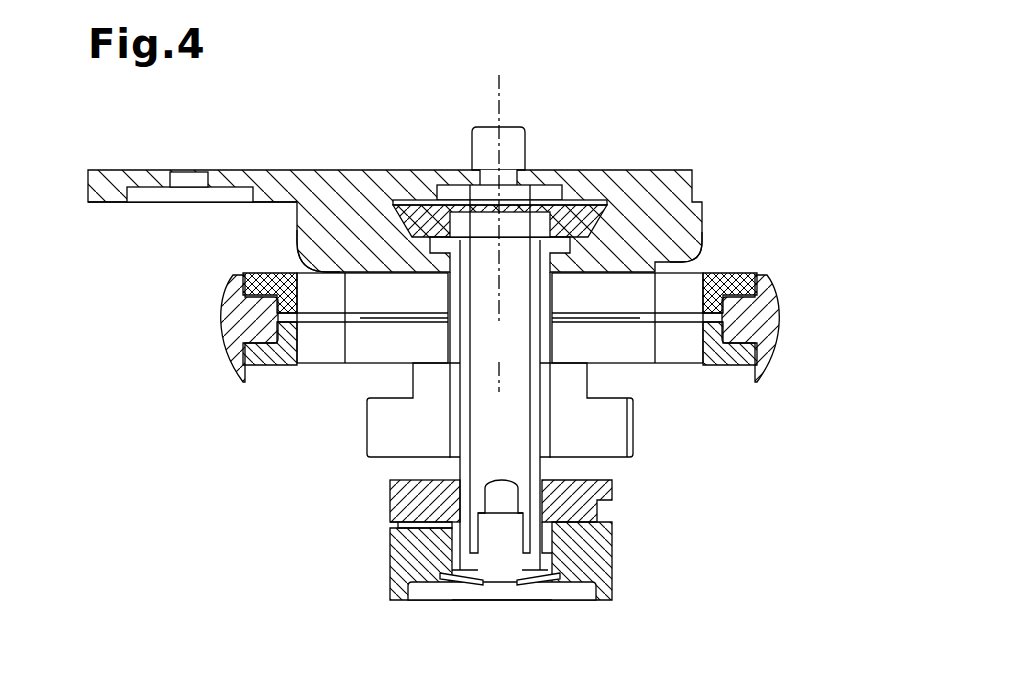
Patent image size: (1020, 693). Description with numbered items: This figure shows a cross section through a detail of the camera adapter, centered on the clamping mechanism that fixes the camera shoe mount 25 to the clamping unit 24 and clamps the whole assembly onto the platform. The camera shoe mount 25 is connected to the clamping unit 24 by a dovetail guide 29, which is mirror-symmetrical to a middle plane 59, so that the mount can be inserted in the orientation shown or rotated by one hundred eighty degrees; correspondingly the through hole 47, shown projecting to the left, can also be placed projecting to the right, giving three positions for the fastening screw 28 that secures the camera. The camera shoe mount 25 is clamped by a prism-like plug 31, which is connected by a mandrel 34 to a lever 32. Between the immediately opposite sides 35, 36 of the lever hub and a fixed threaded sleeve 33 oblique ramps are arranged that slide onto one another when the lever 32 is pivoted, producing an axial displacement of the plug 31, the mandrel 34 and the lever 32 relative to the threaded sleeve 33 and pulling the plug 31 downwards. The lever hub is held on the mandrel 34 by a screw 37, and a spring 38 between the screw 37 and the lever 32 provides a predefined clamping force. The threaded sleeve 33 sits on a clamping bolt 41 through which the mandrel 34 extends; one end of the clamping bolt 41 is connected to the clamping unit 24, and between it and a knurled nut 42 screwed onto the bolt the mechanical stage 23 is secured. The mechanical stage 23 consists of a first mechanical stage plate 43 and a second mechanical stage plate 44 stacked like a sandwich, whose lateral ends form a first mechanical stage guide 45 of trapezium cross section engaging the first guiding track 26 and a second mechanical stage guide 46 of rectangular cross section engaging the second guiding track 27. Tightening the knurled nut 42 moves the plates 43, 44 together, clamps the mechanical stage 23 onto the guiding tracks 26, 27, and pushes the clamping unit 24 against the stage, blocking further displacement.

The mechanical stage 23 is at (222, 364).
The clamping unit 24 is at (283, 240).
The camera shoe mount 25 is at (78, 205).
The first guiding track 26 is at (748, 315).
The second guiding track 27 is at (255, 322).
The fastening screw 28 is at (517, 124).
The dovetail guide 29 is at (328, 222).
The plug 31 is at (576, 212).
The lever 32 is at (387, 572).
The threaded sleeve 33 is at (384, 504).
The mandrel 34 is at (512, 357).
The side of the lever hub 35 is at (600, 522).
The side of the lever hub 36 is at (393, 527).
The screw 37 is at (443, 607).
The spring 38 is at (572, 586).
The clamping bolt 41 is at (562, 346).
The knurled nut 42 is at (641, 442).
The first mechanical stage plate 43 is at (282, 370).
The second mechanical stage plate 44 is at (252, 269).
The first mechanical stage guide 45 is at (748, 372).
The second mechanical stage guide 46 is at (255, 352).
The through hole 47 is at (184, 166).
The middle plane 59 is at (493, 97).